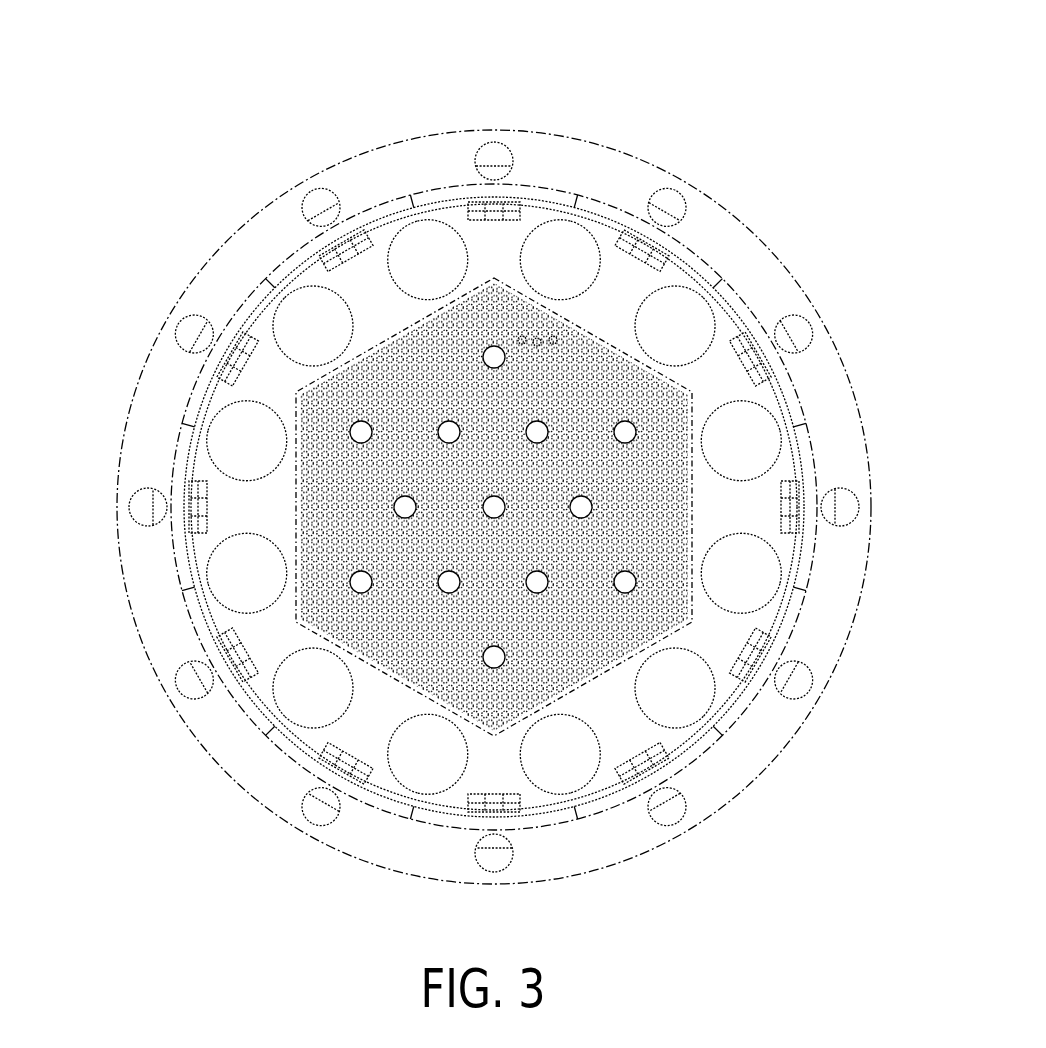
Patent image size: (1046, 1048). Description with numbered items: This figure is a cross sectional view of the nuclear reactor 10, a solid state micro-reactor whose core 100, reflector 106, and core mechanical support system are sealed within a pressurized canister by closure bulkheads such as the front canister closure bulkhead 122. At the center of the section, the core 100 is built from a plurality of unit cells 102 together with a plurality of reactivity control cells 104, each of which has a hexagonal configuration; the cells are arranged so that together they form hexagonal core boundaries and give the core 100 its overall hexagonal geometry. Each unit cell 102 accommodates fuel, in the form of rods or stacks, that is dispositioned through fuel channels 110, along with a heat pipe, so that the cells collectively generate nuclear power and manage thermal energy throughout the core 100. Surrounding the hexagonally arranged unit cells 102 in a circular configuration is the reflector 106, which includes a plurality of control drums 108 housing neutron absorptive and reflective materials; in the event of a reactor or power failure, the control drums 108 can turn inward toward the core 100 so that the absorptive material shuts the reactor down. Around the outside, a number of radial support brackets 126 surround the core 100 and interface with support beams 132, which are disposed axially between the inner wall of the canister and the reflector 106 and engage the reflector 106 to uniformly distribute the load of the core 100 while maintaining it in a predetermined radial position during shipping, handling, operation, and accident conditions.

The nuclear reactor 10 is at (762, 112).
The core 100 is at (300, 258).
The unit cells 102 is at (390, 527).
The reactivity control cells 104 is at (537, 582).
The reflector 106 is at (723, 330).
The control drums 108 is at (740, 578).
The fuel channels 110 is at (522, 335).
The front canister closure bulkhead 122 is at (723, 227).
The radial support brackets 126 is at (510, 805).
The support beams 132 is at (345, 257).